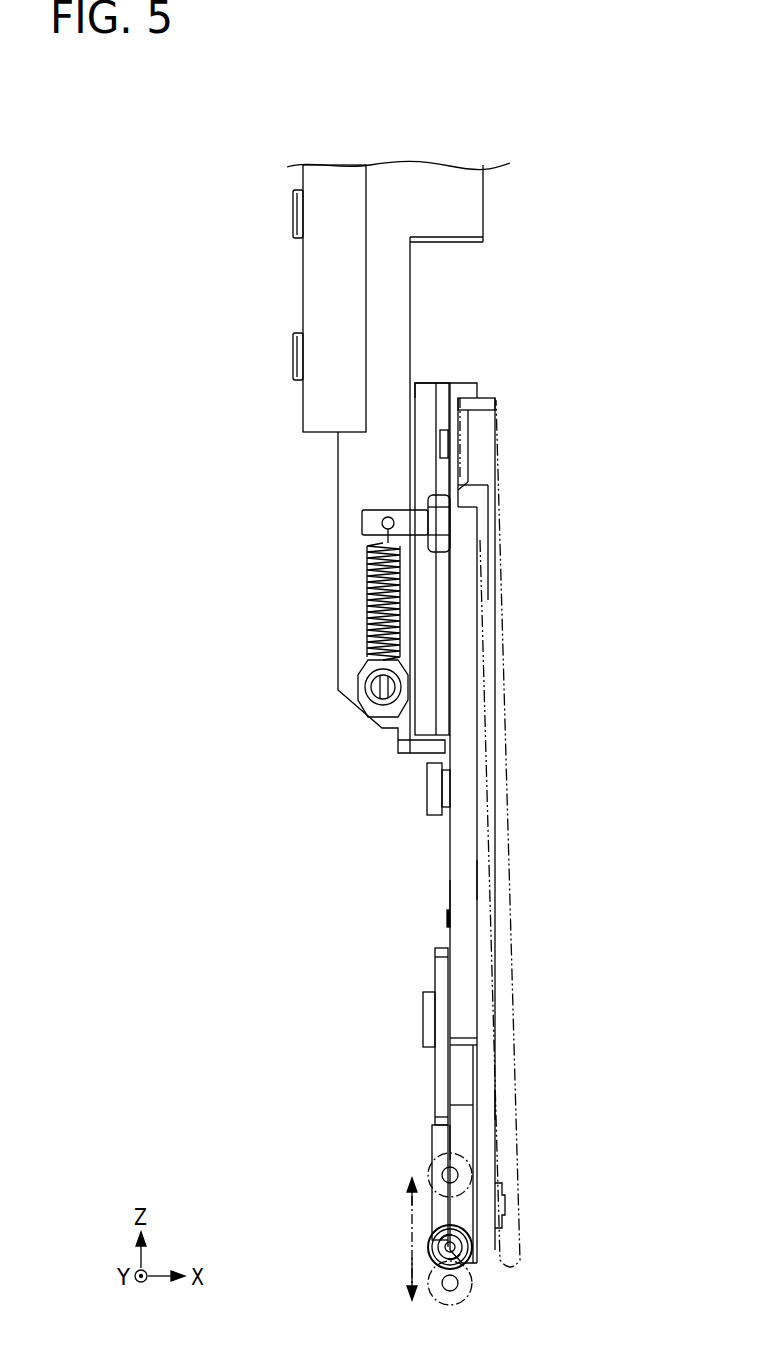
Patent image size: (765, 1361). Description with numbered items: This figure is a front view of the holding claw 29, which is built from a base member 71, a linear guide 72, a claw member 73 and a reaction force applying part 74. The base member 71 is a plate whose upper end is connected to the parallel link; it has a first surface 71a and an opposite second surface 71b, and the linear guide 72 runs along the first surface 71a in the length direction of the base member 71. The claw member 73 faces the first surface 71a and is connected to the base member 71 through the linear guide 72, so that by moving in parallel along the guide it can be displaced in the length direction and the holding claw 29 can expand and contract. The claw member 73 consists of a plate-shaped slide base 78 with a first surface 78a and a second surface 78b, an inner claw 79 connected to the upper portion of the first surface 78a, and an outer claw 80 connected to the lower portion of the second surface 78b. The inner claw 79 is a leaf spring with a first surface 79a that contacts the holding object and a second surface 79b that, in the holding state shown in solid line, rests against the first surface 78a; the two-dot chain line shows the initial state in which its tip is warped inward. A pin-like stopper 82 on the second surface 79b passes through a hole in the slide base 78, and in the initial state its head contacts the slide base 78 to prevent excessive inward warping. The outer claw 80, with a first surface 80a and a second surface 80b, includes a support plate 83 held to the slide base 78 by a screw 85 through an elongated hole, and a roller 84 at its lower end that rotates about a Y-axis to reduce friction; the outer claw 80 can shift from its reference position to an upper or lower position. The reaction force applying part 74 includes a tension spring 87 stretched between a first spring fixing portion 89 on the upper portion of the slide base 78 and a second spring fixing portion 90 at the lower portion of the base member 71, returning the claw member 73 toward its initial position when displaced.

The holding claw 29 is at (373, 130).
The base member 71 is at (395, 265).
The first surface 71a is at (410, 297).
The second surface 71b is at (338, 455).
The linear guide 72 is at (428, 385).
The claw member 73 is at (522, 693).
The reaction force applying part 74 is at (328, 601).
The tension spring 87 is at (370, 600).
The first spring fixing portion 89 is at (362, 522).
The second spring fixing portion 90 is at (366, 688).
The slide base 78 is at (453, 850).
The first surface 78a is at (477, 880).
The second surface 78b is at (450, 897).
The stopper 82 is at (430, 790).
The outer claw 80 is at (416, 978).
The screw 85 is at (428, 1020).
The support plate 83 is at (443, 1070).
The inner claw 79 is at (490, 1047).
The first surface 79a is at (495, 1107).
The second surface 79b is at (472, 1105).
The first surface 80a is at (450, 1140).
The second surface 80b is at (440, 1140).
The roller 84 is at (428, 1168).